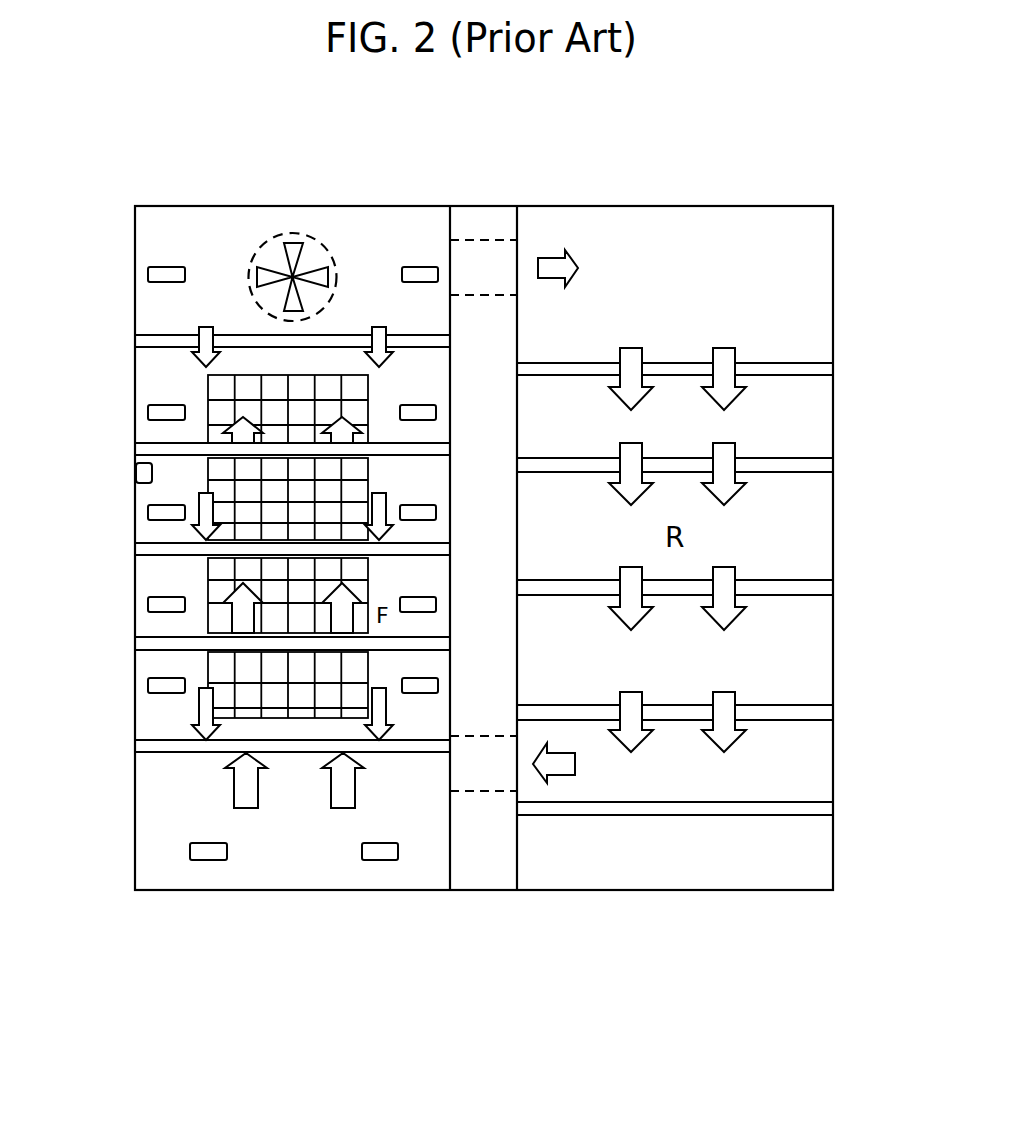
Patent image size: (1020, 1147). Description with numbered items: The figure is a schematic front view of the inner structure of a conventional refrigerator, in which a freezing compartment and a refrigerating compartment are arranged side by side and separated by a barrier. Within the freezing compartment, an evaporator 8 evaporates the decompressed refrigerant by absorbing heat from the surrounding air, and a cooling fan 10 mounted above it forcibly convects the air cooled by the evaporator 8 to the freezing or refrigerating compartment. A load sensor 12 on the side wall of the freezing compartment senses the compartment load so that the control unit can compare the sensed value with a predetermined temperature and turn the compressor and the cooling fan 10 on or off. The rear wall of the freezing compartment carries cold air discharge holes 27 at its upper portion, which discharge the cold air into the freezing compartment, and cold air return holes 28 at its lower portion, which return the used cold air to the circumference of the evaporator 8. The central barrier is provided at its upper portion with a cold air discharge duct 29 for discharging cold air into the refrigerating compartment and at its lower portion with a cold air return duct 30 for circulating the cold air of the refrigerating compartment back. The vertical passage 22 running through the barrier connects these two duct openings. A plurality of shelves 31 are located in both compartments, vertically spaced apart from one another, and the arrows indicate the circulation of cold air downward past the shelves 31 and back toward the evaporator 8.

The evaporator 8 is at (295, 712).
The cooling fan 10 is at (264, 248).
The load sensor 12 is at (137, 477).
The cold air duct 22 is at (493, 343).
The cold air discharge holes 27 is at (151, 266).
The cold air return holes 28 is at (211, 860).
The cold air discharge duct 29 is at (480, 238).
The cold air return duct 30 is at (485, 792).
The shelves 31 is at (140, 751).